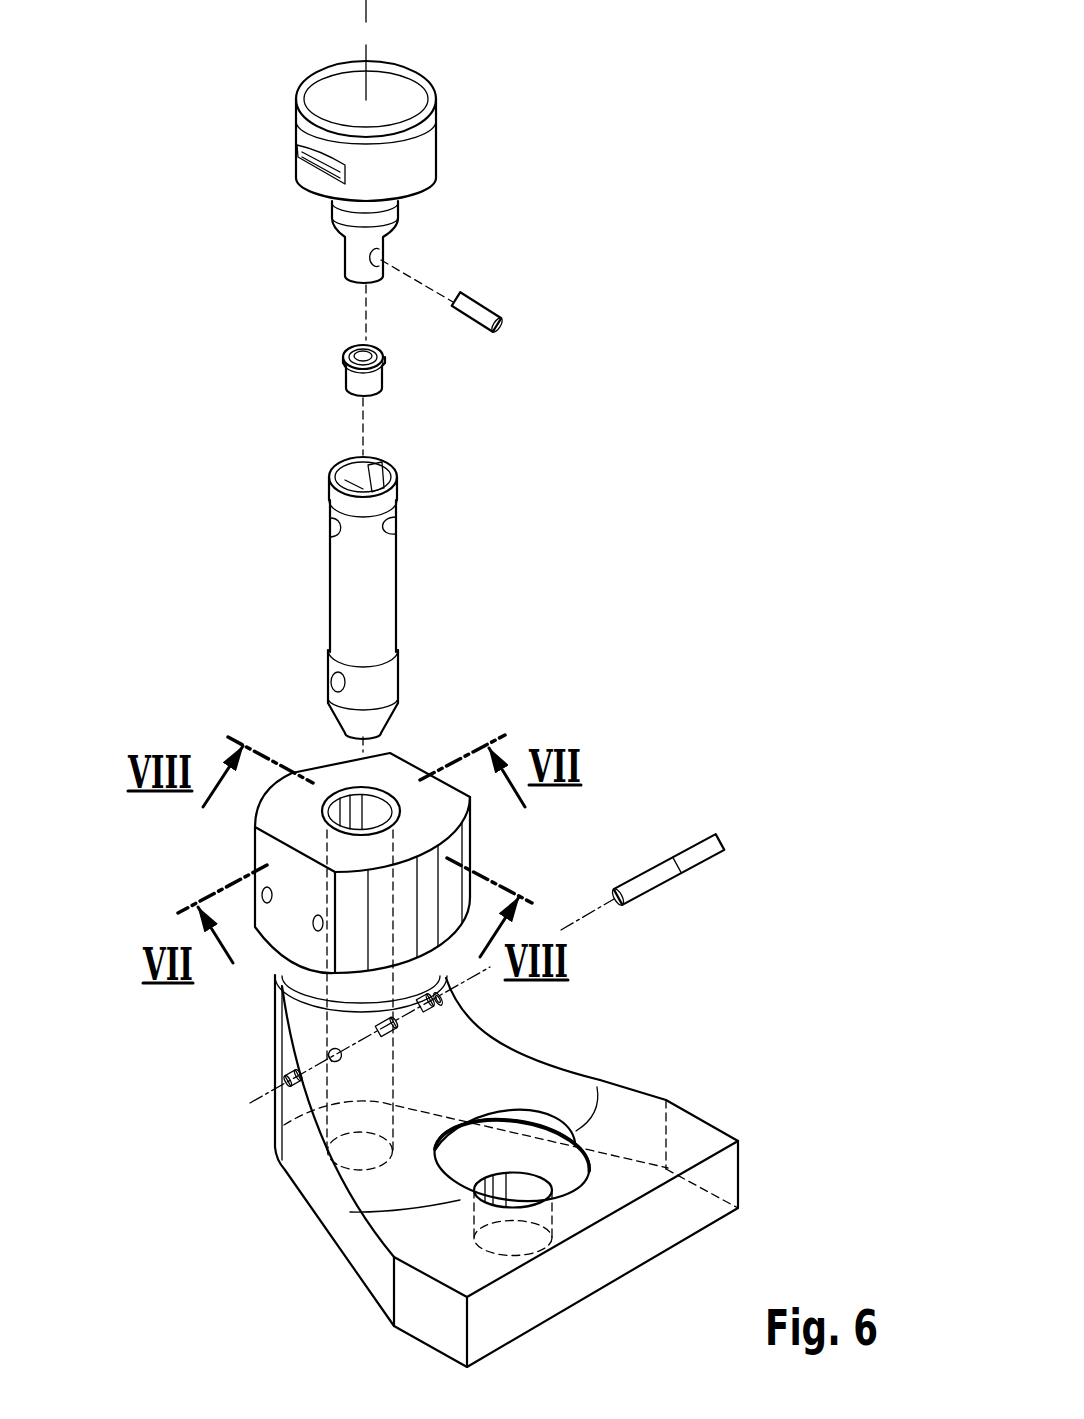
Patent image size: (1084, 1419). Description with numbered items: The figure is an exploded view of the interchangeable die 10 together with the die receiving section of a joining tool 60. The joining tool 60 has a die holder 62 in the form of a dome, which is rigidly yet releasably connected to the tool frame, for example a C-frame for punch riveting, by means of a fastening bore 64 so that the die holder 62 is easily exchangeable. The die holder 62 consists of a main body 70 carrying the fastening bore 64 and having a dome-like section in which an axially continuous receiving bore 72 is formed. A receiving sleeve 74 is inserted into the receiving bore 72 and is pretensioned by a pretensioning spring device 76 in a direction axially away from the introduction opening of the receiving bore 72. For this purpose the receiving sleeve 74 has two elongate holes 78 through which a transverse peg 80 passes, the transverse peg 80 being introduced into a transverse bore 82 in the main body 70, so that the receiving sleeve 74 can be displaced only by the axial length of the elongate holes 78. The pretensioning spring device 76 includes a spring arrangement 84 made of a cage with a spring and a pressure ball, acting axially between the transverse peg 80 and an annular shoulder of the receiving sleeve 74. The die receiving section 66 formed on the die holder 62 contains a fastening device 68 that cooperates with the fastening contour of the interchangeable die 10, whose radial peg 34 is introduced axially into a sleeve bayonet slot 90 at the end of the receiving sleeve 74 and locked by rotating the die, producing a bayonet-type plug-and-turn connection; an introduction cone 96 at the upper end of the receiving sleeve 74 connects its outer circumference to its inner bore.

The interchangeable die 10 is at (521, 143).
The radial peg 34 is at (480, 307).
The joining tool 60 is at (644, 717).
The die holder 62 is at (652, 1055).
The fastening bore 64 is at (552, 1222).
The die receiving section 66 is at (337, 604).
The fastening device 68 is at (338, 548).
The main body 70 is at (551, 1088).
The receiving bore 72 is at (394, 1065).
The receiving sleeve 74 is at (403, 585).
The pretensioning spring device 76 is at (278, 646).
The elongate holes 78 is at (333, 679).
The transverse peg 80 is at (693, 852).
The transverse bore 82 is at (294, 1054).
The spring arrangement 84 is at (411, 377).
The sleeve bayonet slot 90 is at (410, 514).
The introduction cone 96 is at (345, 474).